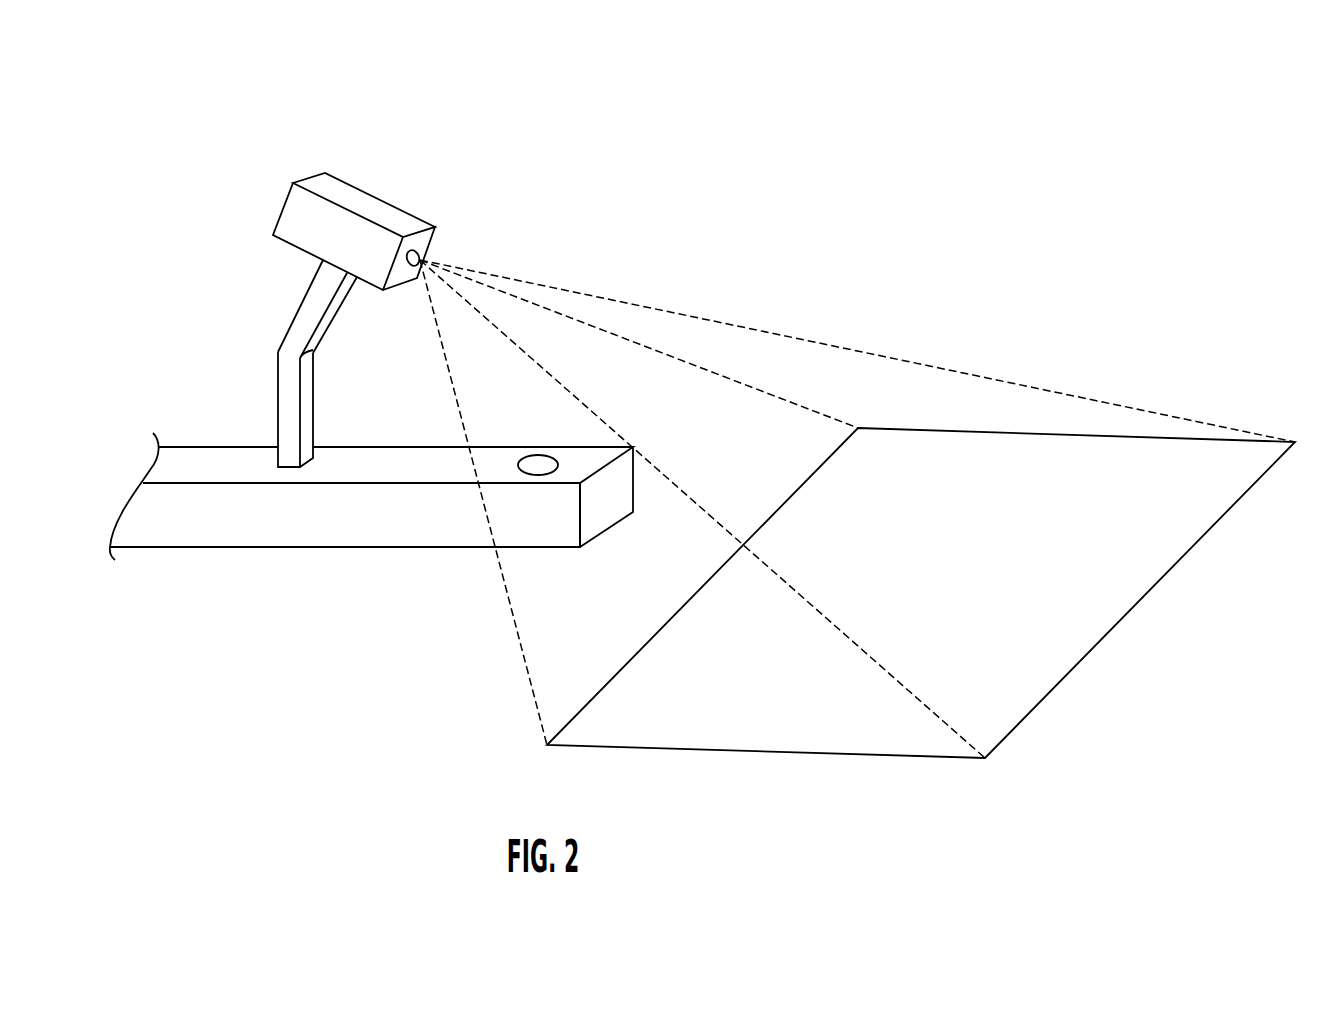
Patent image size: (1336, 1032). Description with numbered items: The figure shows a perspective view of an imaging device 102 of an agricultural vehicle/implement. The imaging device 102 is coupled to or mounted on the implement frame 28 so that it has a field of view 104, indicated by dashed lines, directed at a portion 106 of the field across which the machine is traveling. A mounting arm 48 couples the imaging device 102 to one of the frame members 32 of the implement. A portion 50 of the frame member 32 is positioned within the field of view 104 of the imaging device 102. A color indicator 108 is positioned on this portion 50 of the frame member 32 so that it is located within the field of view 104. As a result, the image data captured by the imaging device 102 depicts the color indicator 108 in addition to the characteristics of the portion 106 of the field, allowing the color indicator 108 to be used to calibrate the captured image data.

The imaging device 102 is at (270, 170).
The mounting arm 48 is at (278, 352).
The implement frame 28 is at (352, 536).
The frame member 32 is at (255, 548).
The portion of frame member 50 is at (528, 563).
The field of view 104 is at (812, 407).
The portion of the field 106 is at (1100, 640).
The color indicator 108 is at (538, 453).